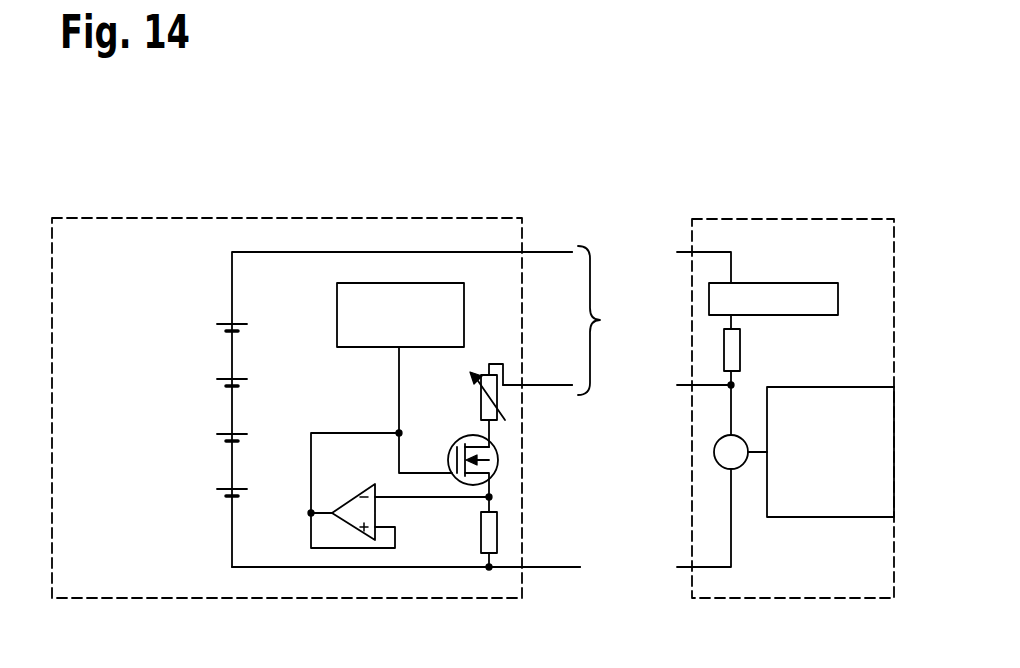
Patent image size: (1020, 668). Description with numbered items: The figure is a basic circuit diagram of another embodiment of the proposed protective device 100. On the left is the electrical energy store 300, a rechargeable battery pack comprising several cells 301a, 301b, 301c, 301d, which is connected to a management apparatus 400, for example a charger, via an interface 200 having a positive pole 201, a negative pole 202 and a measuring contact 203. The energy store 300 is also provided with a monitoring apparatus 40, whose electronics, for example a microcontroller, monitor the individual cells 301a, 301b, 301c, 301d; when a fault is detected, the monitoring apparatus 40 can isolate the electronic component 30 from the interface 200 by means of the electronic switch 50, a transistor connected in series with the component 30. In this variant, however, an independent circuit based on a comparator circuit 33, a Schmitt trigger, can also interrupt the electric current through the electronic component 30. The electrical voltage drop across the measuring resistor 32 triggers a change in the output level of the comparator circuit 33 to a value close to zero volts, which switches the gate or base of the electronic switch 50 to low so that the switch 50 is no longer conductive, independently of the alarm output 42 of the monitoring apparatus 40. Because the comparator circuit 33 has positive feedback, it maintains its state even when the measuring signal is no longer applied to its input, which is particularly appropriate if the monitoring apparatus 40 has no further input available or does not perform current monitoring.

The protective device 100 is at (148, 162).
The electrical energy store 300 is at (278, 217).
The cell 301a is at (198, 326).
The cell 301b is at (198, 381).
The cell 301c is at (198, 436).
The cell 301d is at (198, 491).
The monitoring apparatus 40 is at (337, 310).
The output 42 is at (397, 348).
The electronic component 30 is at (480, 400).
The electronic switch 50 is at (470, 440).
The comparator circuit 33 is at (345, 498).
The measuring resistor 32 is at (480, 540).
The interface 200 is at (588, 412).
The positive pole 201 is at (560, 250).
The negative pole 202 is at (560, 570).
The measuring contact 203 is at (560, 388).
The management apparatus 400 is at (795, 217).